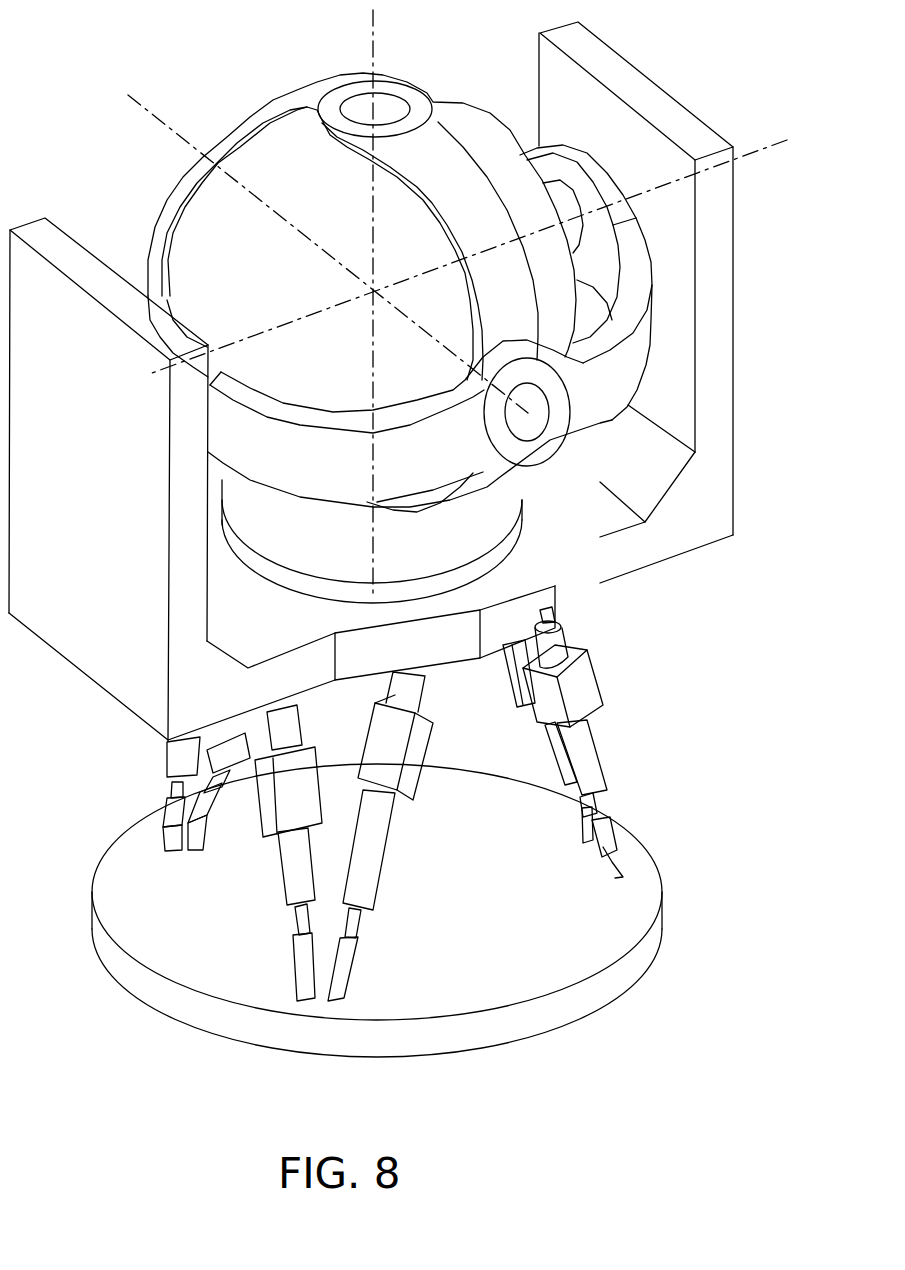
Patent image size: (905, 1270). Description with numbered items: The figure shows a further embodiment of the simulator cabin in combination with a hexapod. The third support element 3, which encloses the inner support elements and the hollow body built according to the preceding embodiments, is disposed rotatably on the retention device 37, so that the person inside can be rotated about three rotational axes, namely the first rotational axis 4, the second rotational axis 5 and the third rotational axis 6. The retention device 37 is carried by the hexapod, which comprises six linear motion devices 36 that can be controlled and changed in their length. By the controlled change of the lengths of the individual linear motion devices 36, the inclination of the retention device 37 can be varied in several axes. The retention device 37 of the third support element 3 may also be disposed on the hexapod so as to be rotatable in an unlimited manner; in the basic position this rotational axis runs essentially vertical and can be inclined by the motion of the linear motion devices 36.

The third support element 3 is at (498, 122).
The first rotational axis 4 is at (375, 22).
The second rotational axis 5 is at (145, 108).
The third rotational axis 6 is at (762, 147).
The linear motion device 36 is at (580, 758).
The retention device 37 is at (48, 247).